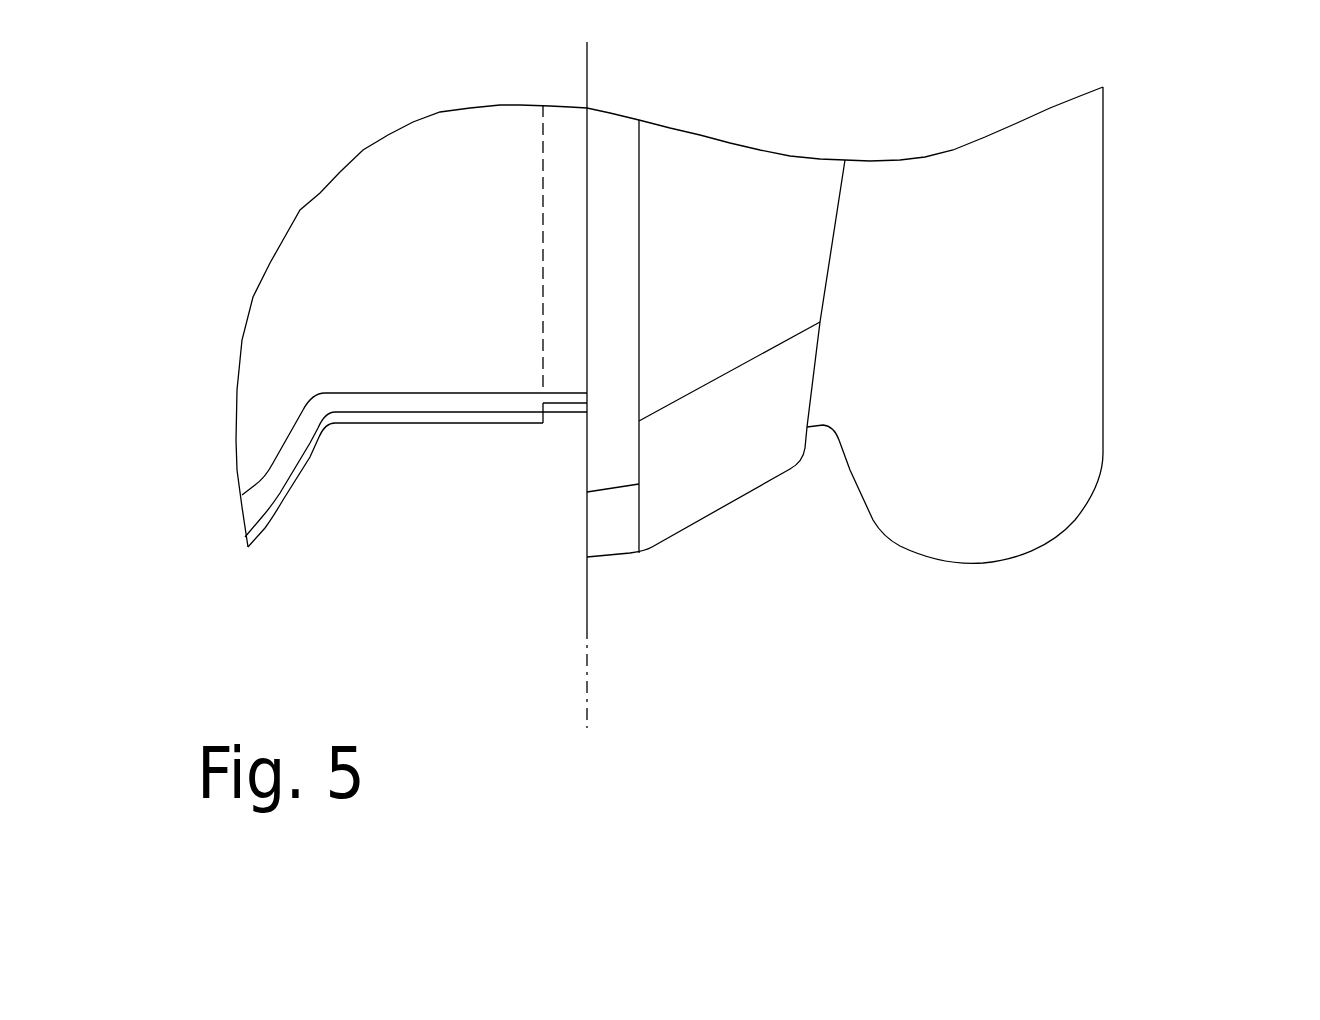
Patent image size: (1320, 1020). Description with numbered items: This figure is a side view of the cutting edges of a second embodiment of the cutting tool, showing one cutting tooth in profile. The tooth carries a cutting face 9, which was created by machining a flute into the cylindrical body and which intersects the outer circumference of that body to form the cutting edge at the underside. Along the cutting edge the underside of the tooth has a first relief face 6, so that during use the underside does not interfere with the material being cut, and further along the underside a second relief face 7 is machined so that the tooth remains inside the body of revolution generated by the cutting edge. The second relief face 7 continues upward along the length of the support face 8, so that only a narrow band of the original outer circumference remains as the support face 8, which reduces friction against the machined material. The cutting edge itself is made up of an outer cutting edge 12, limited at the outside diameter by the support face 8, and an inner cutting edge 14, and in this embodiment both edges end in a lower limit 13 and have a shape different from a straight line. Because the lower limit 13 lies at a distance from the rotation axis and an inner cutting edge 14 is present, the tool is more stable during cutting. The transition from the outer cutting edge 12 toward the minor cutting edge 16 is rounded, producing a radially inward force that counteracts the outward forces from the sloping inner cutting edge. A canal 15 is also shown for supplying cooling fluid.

The first relief face 6 is at (462, 539).
The second relief face 7 is at (740, 663).
The support face 8 is at (1210, 212).
The cutting face 9 is at (535, 598).
The outer cutting edge 12 is at (1105, 604).
The lower limit 13 is at (1003, 614).
The inner cutting edge 14 is at (873, 598).
The canal 15 is at (560, 360).
The minor cutting edge 16 is at (574, 443).